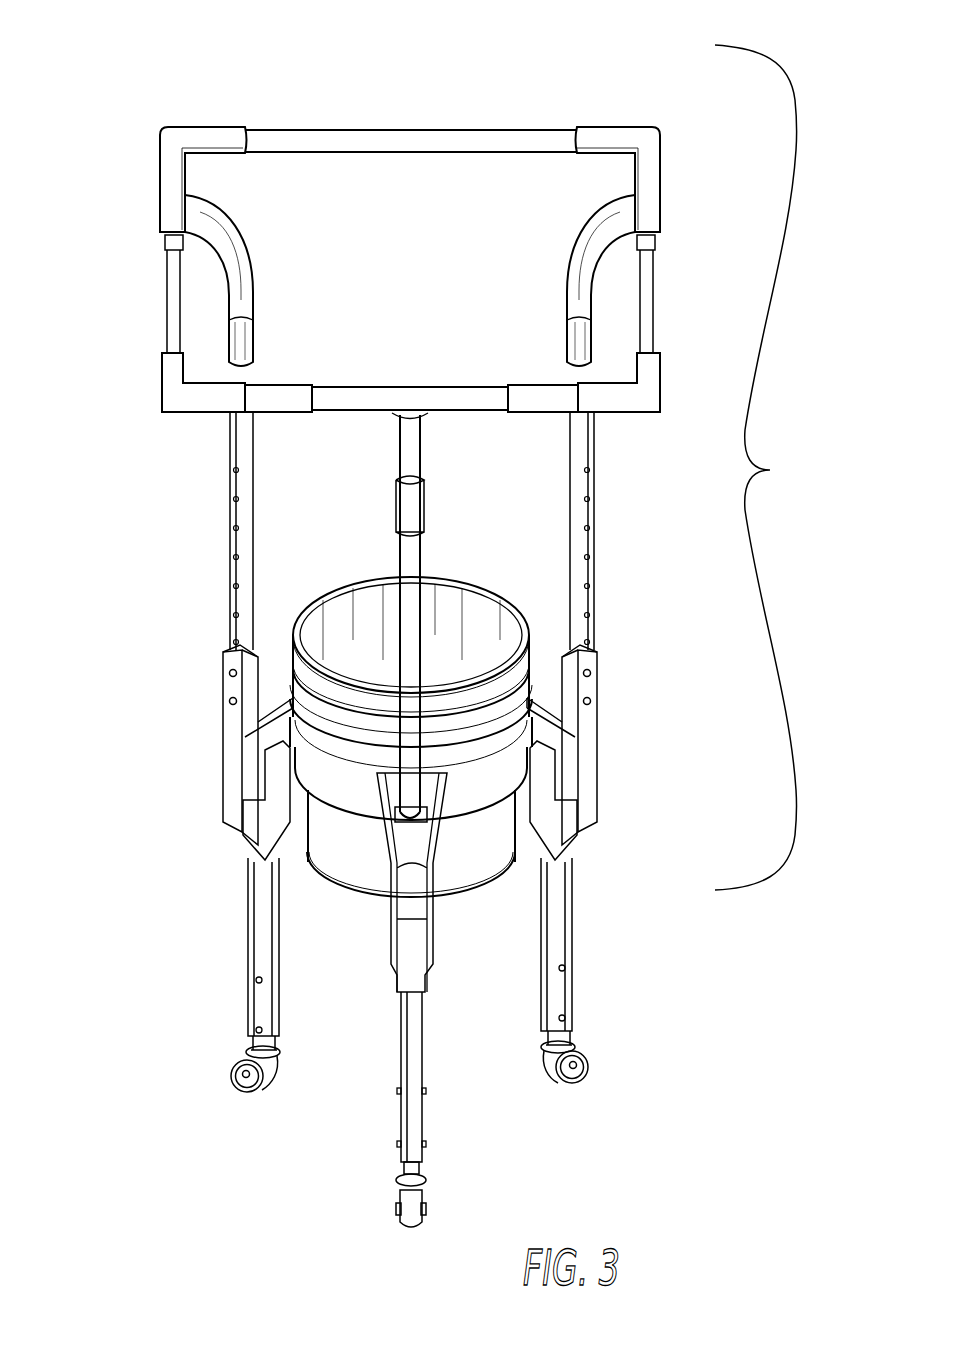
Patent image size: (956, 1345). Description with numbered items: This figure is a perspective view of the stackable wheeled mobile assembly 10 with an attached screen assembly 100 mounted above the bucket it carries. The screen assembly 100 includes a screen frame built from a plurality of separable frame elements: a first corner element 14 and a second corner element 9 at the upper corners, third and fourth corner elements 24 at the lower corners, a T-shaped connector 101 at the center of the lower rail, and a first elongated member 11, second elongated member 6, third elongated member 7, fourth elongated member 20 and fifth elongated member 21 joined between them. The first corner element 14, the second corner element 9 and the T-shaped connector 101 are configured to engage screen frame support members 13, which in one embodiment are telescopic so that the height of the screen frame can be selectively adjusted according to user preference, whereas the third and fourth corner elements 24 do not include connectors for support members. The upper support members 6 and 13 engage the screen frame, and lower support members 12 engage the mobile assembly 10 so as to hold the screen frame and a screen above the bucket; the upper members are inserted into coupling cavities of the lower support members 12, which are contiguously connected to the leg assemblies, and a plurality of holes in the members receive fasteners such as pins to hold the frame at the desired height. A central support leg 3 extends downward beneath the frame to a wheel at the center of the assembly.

The mobile assembly 10 is at (155, 58).
The first elongated member 11 is at (408, 128).
The first corner element 14 is at (162, 130).
The second corner element 9 is at (663, 148).
The third elongated member 7 is at (658, 272).
The fourth elongated member 20 is at (165, 312).
The fifth elongated member 21 is at (268, 398).
The second elongated member 6 is at (538, 398).
The third and fourth corner element 24 is at (160, 405).
The T-shaped connector 101 is at (420, 450).
The screen frame support member 13 is at (238, 565).
The lower support member 12 is at (590, 748).
The central support leg 3 is at (400, 1172).
The screen assembly 100 is at (762, 467).